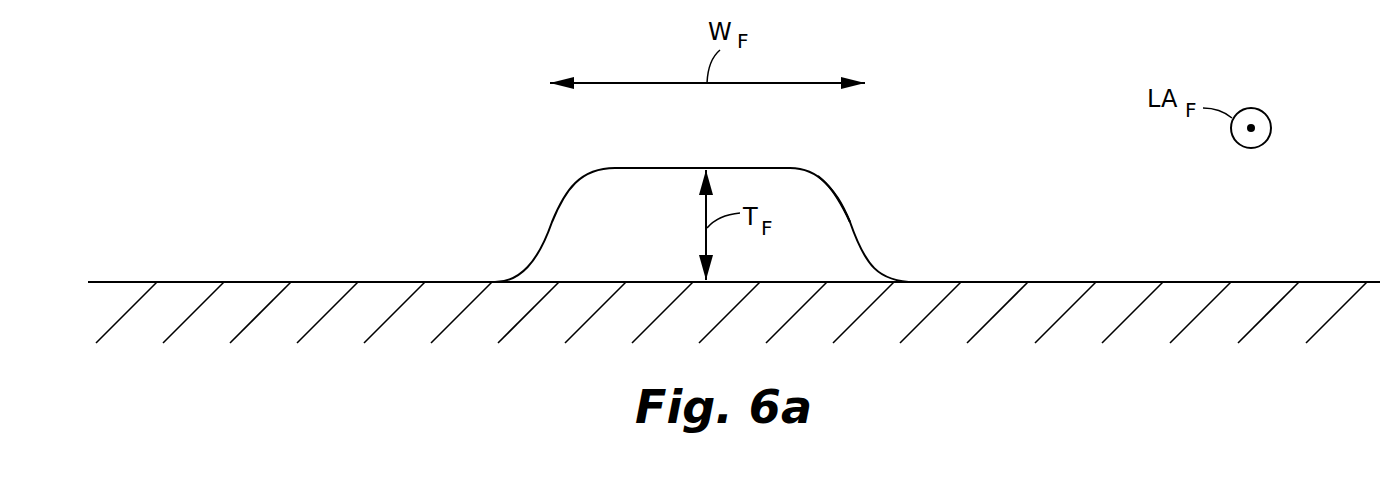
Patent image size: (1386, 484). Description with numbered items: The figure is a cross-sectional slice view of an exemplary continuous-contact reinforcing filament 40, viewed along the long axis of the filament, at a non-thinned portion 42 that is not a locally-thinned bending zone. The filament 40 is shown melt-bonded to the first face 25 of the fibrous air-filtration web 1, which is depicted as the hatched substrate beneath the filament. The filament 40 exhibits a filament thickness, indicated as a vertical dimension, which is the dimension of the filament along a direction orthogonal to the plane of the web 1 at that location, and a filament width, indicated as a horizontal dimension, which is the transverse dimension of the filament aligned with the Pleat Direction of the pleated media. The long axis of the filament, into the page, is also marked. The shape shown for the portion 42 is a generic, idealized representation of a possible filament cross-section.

The fibrous air-filtration web 1 is at (342, 327).
The first face 25 is at (1117, 295).
The continuous-contact reinforcing filament 40 is at (519, 150).
The non-thinned portion 42 is at (835, 203).